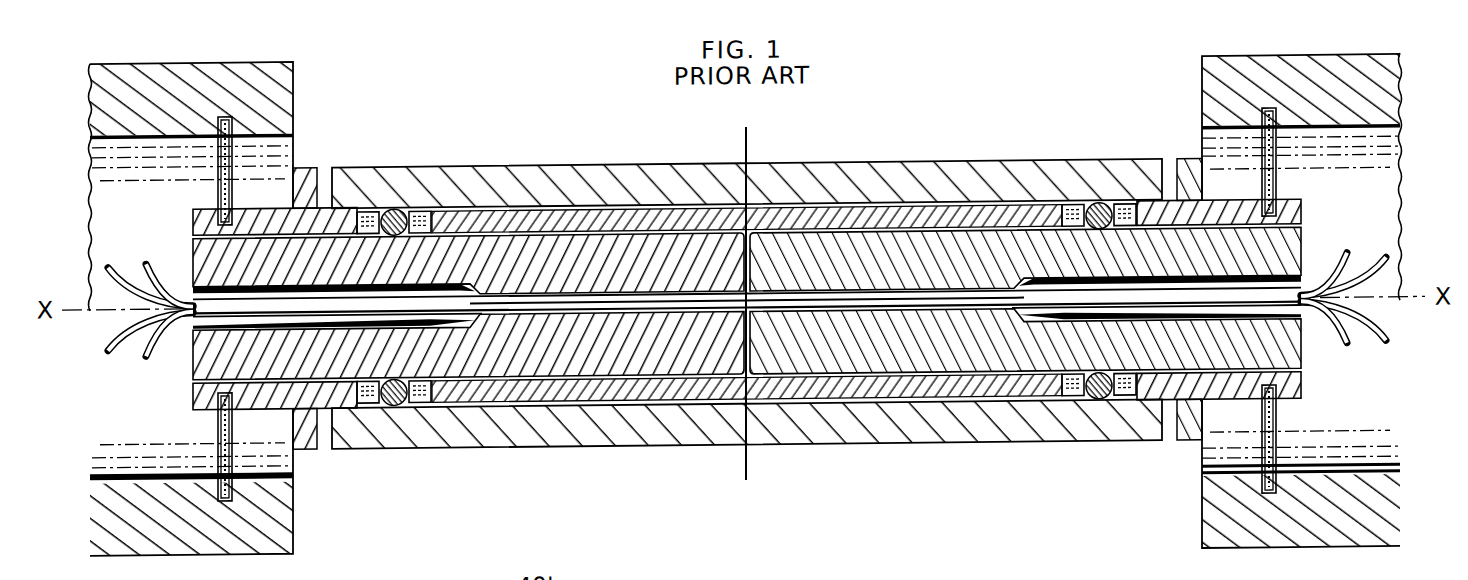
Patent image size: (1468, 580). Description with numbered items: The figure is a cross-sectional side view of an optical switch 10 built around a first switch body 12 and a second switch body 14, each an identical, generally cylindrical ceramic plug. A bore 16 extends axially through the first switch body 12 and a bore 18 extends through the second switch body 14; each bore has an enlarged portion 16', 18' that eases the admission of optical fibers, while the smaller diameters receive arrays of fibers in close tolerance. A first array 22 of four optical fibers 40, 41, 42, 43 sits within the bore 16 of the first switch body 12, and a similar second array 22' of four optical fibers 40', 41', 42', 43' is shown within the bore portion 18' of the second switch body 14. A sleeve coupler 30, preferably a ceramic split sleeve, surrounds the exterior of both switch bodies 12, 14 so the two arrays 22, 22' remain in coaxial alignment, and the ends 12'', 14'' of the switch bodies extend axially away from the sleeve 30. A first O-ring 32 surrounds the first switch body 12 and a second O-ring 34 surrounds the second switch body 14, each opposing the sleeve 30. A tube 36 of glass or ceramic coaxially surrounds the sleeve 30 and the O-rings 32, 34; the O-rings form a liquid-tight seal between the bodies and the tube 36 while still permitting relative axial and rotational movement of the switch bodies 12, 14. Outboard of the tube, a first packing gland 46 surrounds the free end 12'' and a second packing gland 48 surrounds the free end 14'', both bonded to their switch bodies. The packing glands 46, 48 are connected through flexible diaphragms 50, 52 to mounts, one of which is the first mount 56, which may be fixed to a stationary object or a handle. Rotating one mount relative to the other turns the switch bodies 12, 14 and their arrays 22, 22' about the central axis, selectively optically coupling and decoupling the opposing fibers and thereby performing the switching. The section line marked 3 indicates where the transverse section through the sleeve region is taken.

The switch 10 is at (747, 300).
The first switch body 12 is at (437, 243).
The end of first switch body 12'' is at (435, 368).
The second switch body 14 is at (1053, 228).
The end of second switch body 14'' is at (1063, 367).
The bore 16 is at (469, 280).
The enlarged bore portion 16' is at (469, 278).
The bore 18 is at (1023, 275).
The enlarged bore portion 18' is at (1023, 274).
The first array 22 is at (334, 287).
The second array 22' is at (1160, 281).
The sleeve coupler 30 is at (906, 207).
The first O-ring 32 is at (383, 208).
The second O-ring 34 is at (1092, 402).
The tube 36 is at (926, 447).
The optical fiber 40 is at (114, 254).
The optical fiber 41 is at (111, 281).
The optical fiber 42 is at (114, 348).
The optical fiber 43 is at (114, 372).
The optical fiber 40' is at (1382, 230).
The optical fiber 41' is at (1380, 257).
The optical fiber 42' is at (1382, 322).
The optical fiber 43' is at (1382, 346).
The first packing gland 46 is at (192, 418).
The second packing gland 48 is at (1250, 207).
The flexible diaphragm 50 is at (232, 468).
The flexible diaphragm 52 is at (1277, 169).
The first mount 56 is at (199, 56).
The section line 3- 3 is at (746, 127).